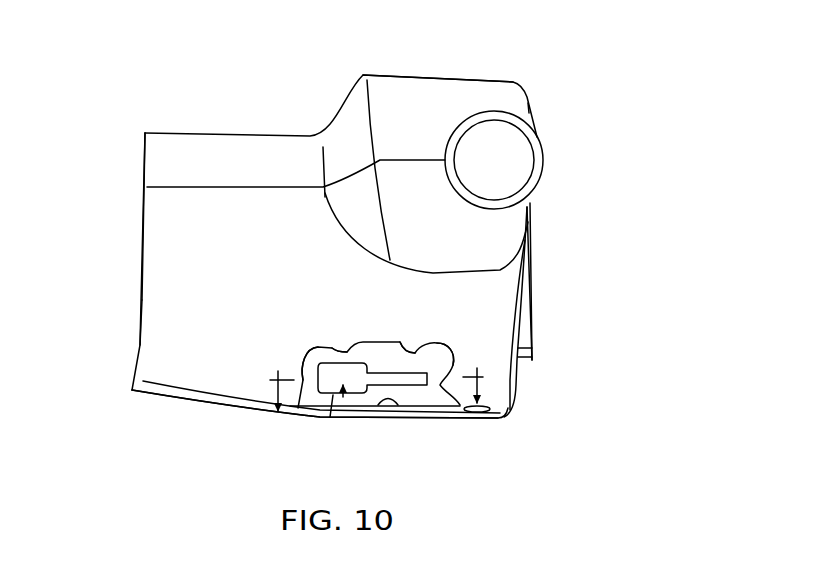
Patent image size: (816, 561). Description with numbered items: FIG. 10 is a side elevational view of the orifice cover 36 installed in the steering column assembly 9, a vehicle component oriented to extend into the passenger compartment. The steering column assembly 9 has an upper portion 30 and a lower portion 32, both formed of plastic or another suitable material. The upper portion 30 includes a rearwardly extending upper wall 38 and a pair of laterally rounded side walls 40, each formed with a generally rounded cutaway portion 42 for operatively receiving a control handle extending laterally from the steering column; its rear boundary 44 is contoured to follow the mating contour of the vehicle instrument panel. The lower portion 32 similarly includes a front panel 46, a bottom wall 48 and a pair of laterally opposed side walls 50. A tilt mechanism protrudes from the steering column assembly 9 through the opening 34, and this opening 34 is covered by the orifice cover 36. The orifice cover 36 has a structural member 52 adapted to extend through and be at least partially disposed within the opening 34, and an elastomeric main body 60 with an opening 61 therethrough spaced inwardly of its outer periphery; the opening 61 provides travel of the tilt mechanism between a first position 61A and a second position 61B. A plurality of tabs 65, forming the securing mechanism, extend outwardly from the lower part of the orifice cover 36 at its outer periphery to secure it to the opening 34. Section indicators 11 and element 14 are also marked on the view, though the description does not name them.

The steering column assembly 9 is at (600, 73).
The section line 11 is at (378, 374).
The rear wall 14 is at (498, 302).
The upper portion 30 is at (490, 78).
The lower portion 32 is at (535, 243).
The opening 34 is at (365, 413).
The orifice cover 36 is at (455, 417).
The upper wall 38 is at (178, 147).
The laterally rounded side walls 40 is at (420, 96).
The rounded cutaway portion 42 is at (513, 142).
The rear boundary 44 is at (143, 153).
The front panel 46 is at (512, 372).
The bottom wall 48 is at (170, 406).
The laterally opposed side walls 50 is at (163, 360).
The structural member 52 is at (383, 363).
The elastomeric main body 60 is at (297, 410).
The opening 61 is at (335, 403).
The first position 61A is at (317, 347).
The second position 61B is at (423, 407).
The tabs 65 is at (330, 350).